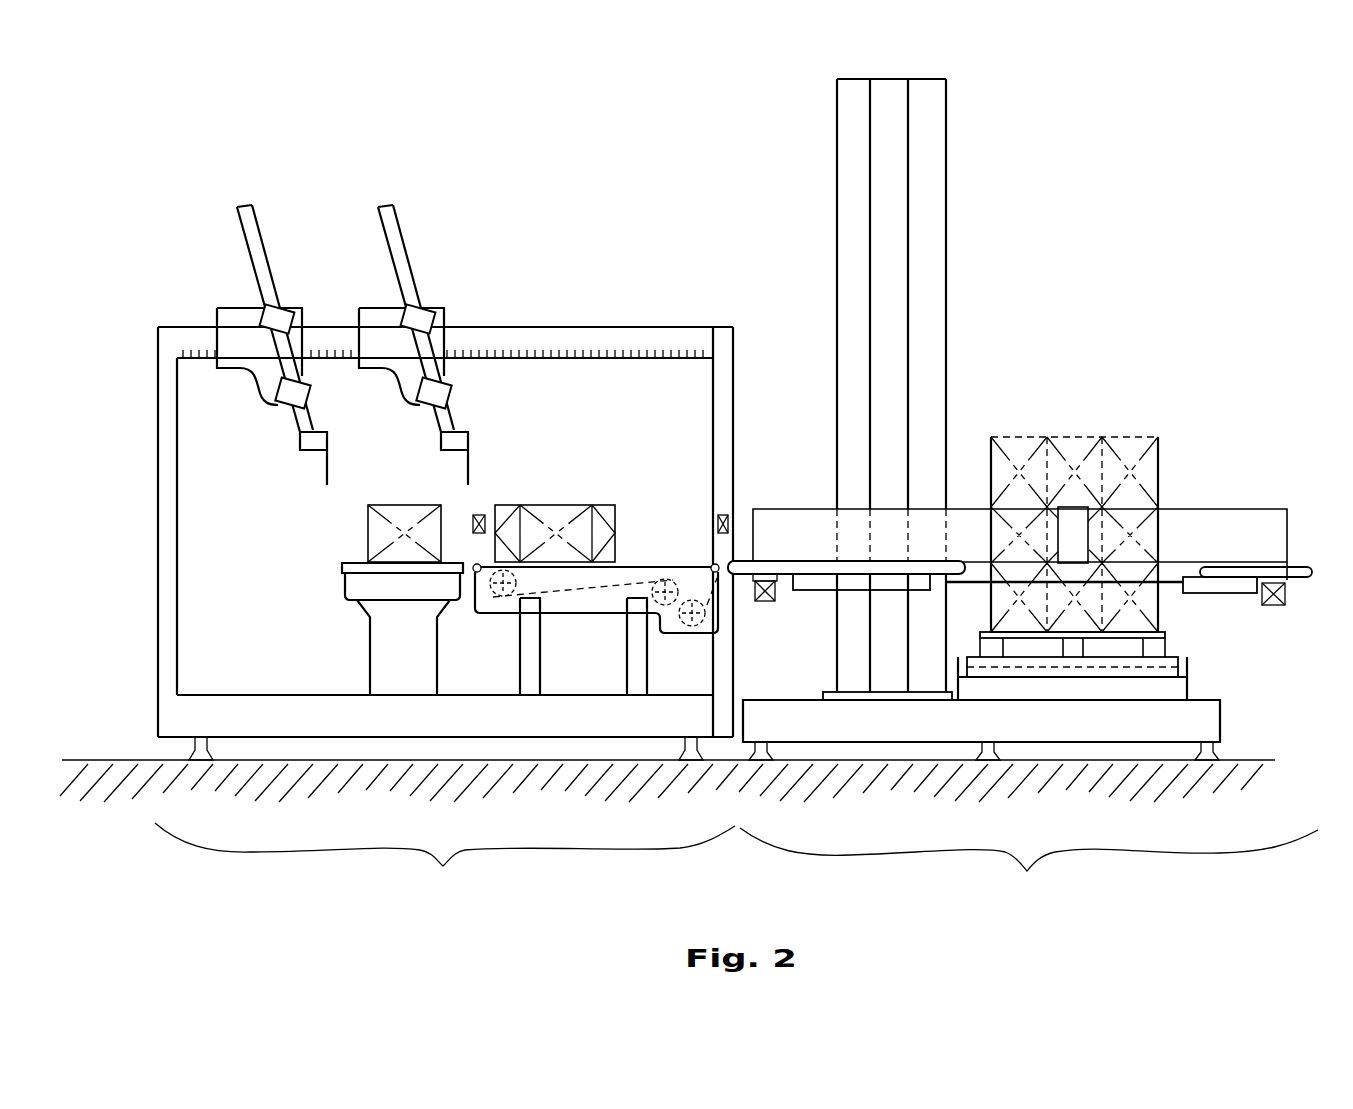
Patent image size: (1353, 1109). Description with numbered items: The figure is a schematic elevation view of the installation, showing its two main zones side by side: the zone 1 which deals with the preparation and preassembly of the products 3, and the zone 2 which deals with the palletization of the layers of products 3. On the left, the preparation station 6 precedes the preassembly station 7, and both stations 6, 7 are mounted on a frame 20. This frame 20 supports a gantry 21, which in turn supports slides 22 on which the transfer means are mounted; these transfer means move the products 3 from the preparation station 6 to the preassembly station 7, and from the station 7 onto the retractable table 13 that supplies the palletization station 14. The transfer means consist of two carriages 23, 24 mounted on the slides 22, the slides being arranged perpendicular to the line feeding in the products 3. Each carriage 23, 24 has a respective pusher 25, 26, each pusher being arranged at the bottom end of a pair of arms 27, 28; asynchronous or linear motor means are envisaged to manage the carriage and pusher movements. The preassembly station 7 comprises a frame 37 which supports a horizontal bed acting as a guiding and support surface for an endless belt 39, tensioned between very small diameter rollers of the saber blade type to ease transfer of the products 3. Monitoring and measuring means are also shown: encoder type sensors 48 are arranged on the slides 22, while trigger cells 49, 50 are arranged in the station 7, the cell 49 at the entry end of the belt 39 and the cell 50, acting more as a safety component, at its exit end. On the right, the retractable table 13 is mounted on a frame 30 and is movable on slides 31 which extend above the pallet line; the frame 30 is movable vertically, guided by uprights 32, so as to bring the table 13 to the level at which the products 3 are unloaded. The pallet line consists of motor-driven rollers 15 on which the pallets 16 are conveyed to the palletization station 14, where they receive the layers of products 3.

The zone 1 is at (445, 862).
The zone 2 is at (1029, 866).
The products 3 is at (540, 505).
The preparation station 6 is at (402, 629).
The preassembly station 7 is at (583, 646).
The retractable table 13 is at (793, 560).
The palletization station 14 is at (1195, 633).
The motor-driven rollers 15 is at (1163, 670).
The pallets 16 is at (1160, 650).
The frame 20 is at (195, 713).
The gantry 21 is at (158, 421).
The slides 22 is at (549, 322).
The carriage 23 is at (222, 303).
The carriage 24 is at (369, 303).
The pusher 25 is at (325, 468).
The pusher 26 is at (466, 462).
The arms 27 is at (239, 207).
The arms 28 is at (380, 206).
The frame 30 is at (1225, 515).
The slides 31 is at (1130, 590).
The uprights 32 is at (946, 205).
The frame 37 is at (492, 599).
The endless belt 39 is at (650, 566).
The encoder type sensors 48 is at (672, 354).
The trigger cell 49 is at (479, 512).
The trigger cell 50 is at (721, 513).